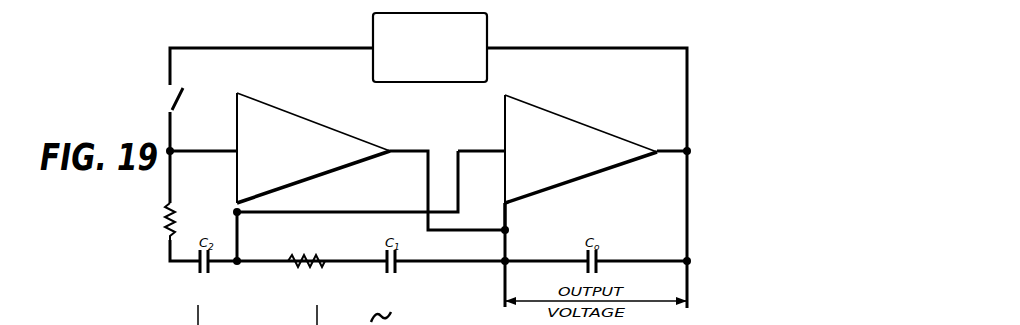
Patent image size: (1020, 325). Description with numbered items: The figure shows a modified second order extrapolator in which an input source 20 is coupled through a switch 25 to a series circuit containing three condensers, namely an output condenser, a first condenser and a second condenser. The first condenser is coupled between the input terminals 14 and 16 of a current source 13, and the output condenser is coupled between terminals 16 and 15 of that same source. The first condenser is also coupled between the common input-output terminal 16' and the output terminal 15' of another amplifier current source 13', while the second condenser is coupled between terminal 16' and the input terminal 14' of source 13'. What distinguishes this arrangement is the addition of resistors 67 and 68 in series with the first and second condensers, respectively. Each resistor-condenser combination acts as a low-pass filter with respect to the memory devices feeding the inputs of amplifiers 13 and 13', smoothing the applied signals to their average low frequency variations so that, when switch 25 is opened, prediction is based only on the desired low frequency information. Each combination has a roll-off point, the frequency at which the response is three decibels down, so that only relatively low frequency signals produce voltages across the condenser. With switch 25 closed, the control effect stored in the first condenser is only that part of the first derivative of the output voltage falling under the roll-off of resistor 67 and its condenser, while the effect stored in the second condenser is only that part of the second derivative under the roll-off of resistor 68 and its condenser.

The input source 20 is at (373, 30).
The switch 25 is at (211, 103).
The current source 13 is at (581, 148).
The amplifier current source 13' is at (313, 148).
The input terminal 14 is at (481, 134).
The input terminal 14' is at (203, 137).
The output terminal 15 is at (672, 136).
The output terminal 15' is at (447, 173).
The input terminal 16 is at (529, 216).
The common input-output terminal 16' is at (329, 181).
The resistor 67 is at (305, 257).
The resistor 68 is at (160, 221).